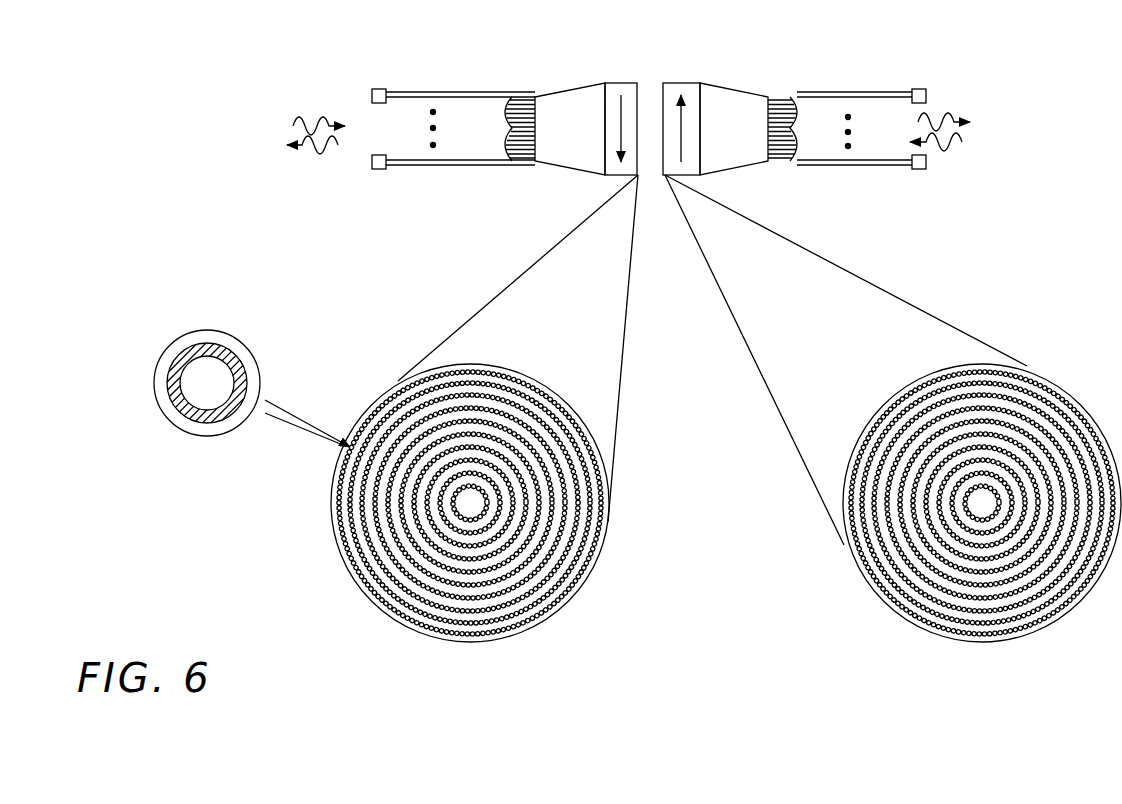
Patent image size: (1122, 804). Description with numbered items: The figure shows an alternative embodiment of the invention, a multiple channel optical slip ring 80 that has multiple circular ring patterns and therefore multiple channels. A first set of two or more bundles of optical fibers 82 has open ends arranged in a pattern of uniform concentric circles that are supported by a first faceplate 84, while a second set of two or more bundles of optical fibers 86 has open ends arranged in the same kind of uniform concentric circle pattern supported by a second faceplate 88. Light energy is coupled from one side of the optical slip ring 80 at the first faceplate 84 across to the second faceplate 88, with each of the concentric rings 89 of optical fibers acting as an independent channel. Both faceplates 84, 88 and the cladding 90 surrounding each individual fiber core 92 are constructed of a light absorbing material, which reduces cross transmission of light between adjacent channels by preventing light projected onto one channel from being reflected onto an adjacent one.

The multiple channel optical slip ring 80 is at (650, 80).
The first set of bundles of optical fibers 82 is at (377, 83).
The first faceplate 84 is at (454, 503).
The second set of bundles of optical fibers 86 is at (924, 82).
The second faceplate 88 is at (1070, 392).
The concentric rings of optical fibers 89 is at (553, 577).
The cladding 90 is at (225, 350).
The fiber core 92 is at (210, 392).